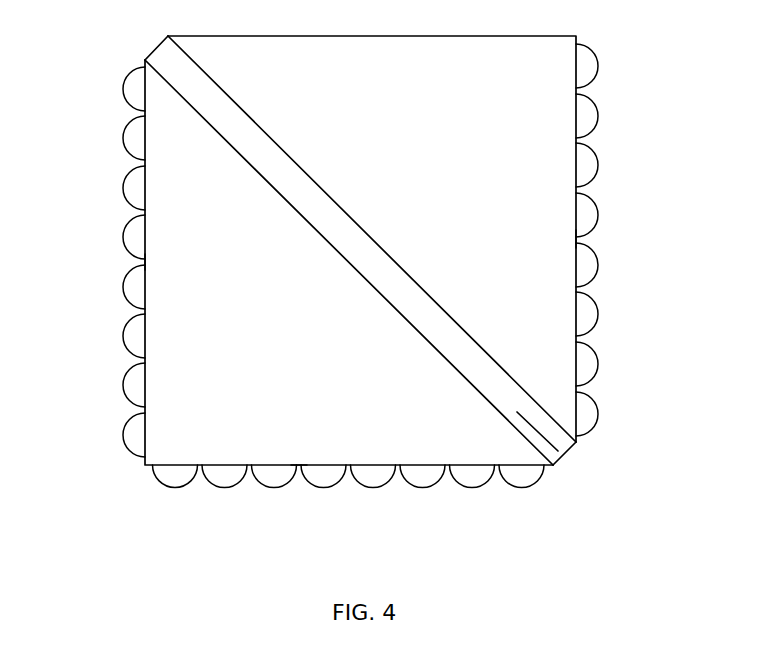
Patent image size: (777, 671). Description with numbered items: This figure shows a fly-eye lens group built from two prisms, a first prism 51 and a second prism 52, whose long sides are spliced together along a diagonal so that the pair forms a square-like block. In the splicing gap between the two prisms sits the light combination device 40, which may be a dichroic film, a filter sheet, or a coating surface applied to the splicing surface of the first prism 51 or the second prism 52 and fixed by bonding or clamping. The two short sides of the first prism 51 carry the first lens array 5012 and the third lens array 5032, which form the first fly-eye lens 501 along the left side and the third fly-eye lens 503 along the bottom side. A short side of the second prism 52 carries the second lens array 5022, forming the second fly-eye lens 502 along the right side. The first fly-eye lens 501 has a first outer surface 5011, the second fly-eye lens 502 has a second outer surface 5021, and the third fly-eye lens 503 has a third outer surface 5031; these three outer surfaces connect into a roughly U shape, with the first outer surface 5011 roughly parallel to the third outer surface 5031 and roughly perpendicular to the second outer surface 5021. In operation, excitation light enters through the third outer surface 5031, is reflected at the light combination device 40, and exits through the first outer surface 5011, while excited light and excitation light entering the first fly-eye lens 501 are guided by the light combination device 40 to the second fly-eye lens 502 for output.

The first prism 51 is at (210, 375).
The second prism 52 is at (497, 168).
The light combination device 40 is at (563, 450).
The first fly-eye lens 501 is at (182, 193).
The first outer surface 5011 is at (145, 262).
The first lens array 5012 is at (137, 385).
The second fly-eye lens 502 is at (553, 330).
The second outer surface 5021 is at (577, 237).
The second lens array 5022 is at (585, 113).
The third fly-eye lens 503 is at (213, 450).
The third outer surface 5031 is at (300, 467).
The third lens array 5032 is at (420, 470).